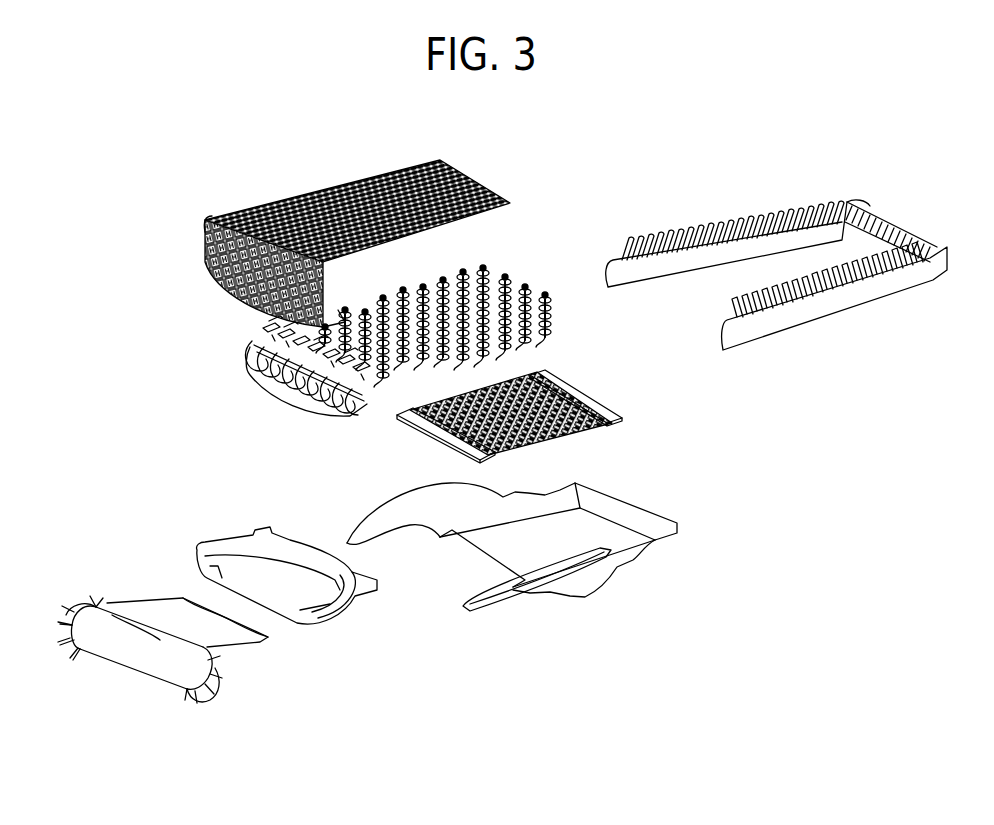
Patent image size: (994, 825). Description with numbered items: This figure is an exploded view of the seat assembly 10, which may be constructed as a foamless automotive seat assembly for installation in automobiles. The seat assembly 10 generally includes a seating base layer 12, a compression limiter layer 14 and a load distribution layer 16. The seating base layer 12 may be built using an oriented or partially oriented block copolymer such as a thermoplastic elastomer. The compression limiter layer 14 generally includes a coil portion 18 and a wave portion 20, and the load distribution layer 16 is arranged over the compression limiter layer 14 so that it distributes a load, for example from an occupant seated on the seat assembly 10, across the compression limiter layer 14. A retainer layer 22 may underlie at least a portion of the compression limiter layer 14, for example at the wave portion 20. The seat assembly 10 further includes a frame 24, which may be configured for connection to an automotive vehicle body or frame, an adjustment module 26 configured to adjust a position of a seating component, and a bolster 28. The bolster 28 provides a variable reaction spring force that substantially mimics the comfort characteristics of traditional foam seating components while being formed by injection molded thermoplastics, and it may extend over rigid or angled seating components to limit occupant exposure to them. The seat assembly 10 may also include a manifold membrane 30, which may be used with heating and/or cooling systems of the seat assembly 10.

The seat assembly 10 is at (228, 158).
The seating base layer 12 is at (573, 417).
The compression limiter layer 14 is at (291, 395).
The load distribution layer 16 is at (338, 187).
The coil portion 18 is at (508, 282).
The wave portion 20 is at (252, 338).
The retainer layer 22 is at (84, 652).
The frame 24 is at (620, 562).
The adjustment module 26 is at (316, 610).
The bolster 28 is at (892, 226).
The manifold membrane 30 is at (598, 527).